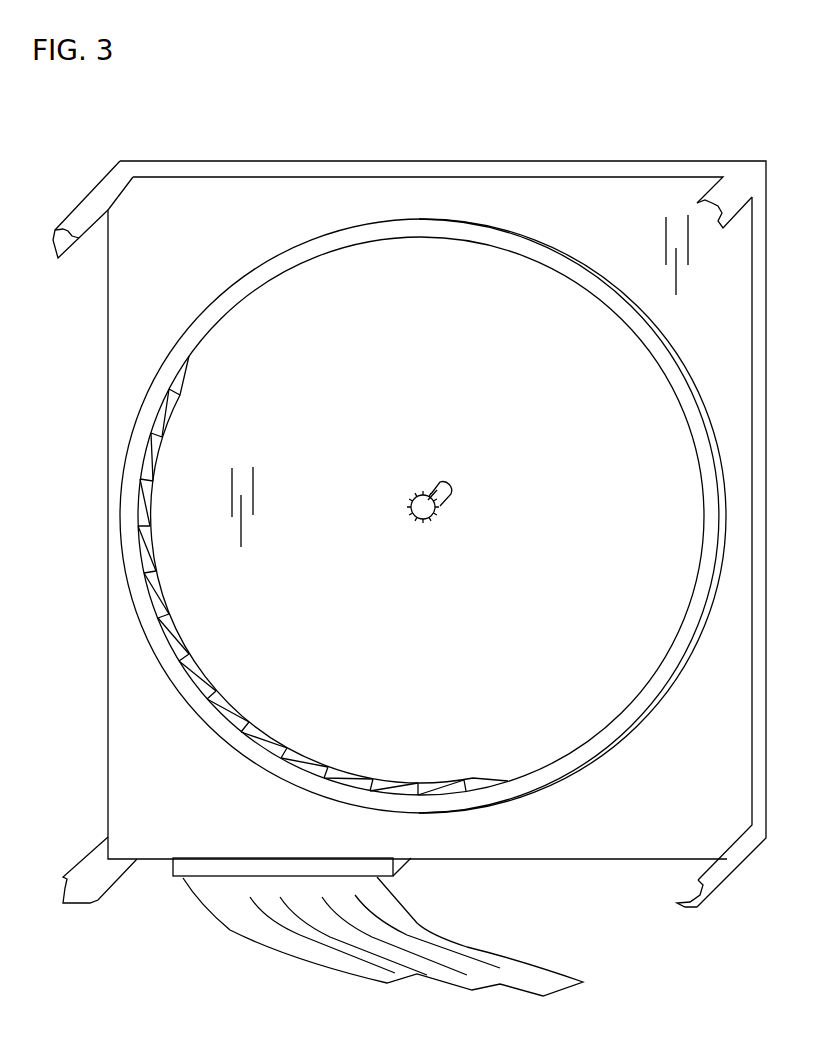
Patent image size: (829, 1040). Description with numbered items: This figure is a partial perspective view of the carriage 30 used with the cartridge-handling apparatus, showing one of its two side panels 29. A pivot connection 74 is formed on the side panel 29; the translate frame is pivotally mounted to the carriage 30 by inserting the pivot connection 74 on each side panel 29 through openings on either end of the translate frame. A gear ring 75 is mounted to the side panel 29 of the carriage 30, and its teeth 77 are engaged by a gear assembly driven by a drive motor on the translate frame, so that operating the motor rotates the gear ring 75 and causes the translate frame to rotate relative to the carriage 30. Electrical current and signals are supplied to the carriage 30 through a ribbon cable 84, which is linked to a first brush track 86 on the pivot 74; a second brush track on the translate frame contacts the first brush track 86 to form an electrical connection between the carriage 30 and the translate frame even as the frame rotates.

The carriage 30 is at (563, 138).
The side panel 29 is at (186, 813).
The gear ring 75 is at (637, 348).
The teeth 77 is at (178, 647).
The first brush track 86 is at (413, 517).
The pivot connection 74 is at (446, 500).
The ribbon cable 84 is at (183, 877).